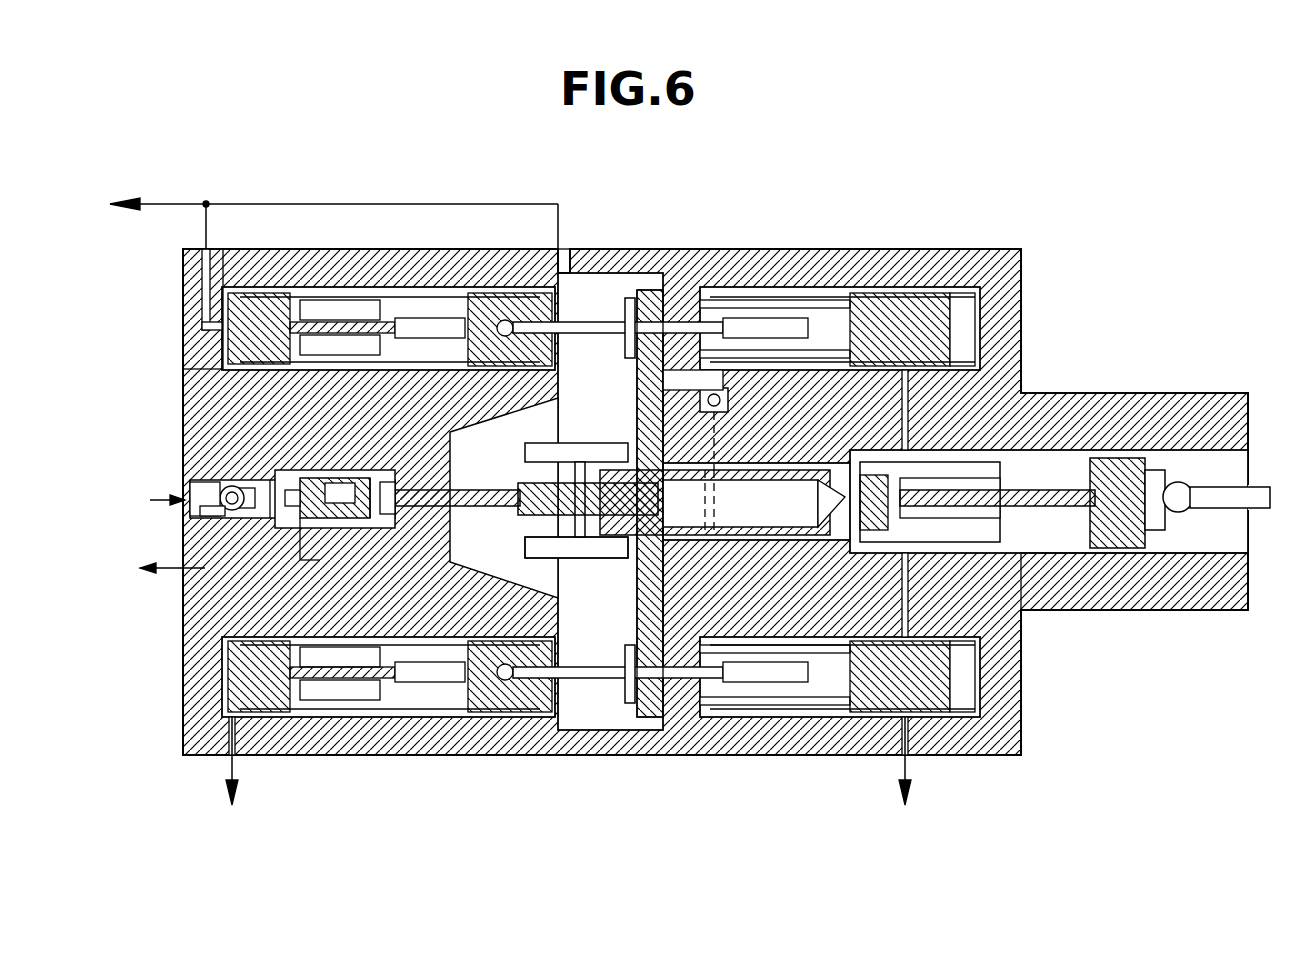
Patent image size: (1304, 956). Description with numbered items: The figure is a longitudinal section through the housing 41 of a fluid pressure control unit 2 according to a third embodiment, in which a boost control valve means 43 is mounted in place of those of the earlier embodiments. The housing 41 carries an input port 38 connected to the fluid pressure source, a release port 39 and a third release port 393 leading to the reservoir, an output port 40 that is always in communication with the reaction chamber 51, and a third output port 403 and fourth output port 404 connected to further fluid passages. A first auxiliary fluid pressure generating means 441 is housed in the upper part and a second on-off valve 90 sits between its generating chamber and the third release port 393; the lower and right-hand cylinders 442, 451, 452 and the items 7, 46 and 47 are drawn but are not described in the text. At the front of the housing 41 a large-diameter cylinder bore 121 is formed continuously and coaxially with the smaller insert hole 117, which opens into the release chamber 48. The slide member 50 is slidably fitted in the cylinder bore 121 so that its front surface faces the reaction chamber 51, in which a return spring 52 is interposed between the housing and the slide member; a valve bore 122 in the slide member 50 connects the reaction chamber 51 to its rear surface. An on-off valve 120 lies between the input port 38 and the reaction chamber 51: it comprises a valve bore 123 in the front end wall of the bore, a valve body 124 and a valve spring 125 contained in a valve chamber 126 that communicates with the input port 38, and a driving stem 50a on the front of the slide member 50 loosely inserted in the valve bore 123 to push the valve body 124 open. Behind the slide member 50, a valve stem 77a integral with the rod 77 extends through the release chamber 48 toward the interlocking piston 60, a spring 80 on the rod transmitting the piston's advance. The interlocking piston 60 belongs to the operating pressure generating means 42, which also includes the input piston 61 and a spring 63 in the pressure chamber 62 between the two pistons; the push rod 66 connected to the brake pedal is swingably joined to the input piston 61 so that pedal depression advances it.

The third release port 393 is at (208, 260).
The first auxiliary fluid pressure generating means 441 is at (382, 285).
The release port 39 is at (568, 258).
The fluid pressure control unit 2 is at (665, 245).
The first actuating chamber 451 is at (828, 285).
The second on-off valve 90 is at (200, 348).
The on-off valve 120 is at (225, 488).
The valve spring 125 is at (222, 492).
The input port 38 is at (195, 484).
The valve body 124 is at (142, 512).
The valve chamber 126 is at (200, 525).
The output port 40 is at (190, 575).
The reaction chamber 51 is at (292, 490).
The return spring 52 is at (340, 483).
The cylinder bore 121 is at (371, 478).
The insert hole 117 is at (390, 482).
The valve stem 77a is at (525, 483).
The spring 80 is at (625, 443).
The locking pin 47 is at (730, 400).
The passage 7 is at (865, 440).
The spring 63 is at (1090, 460).
The input piston 61 is at (1152, 470).
The push rod 66 is at (1230, 470).
The boost control valve means 43 is at (430, 508).
The valve bore 122 is at (325, 525).
The slide member 50 is at (360, 528).
The driving stem 50a is at (275, 520).
The valve bore 123 is at (250, 510).
The rod 77 is at (583, 558).
The partition plate 46 is at (630, 590).
The interlocking piston 60 is at (822, 540).
The pressure chamber 62 is at (960, 542).
The operating pressure generating means 42 is at (1060, 580).
The third output port 403 is at (245, 740).
The second pressure chamber 442 is at (392, 722).
The release chamber 48 is at (604, 717).
The housing 41 is at (604, 755).
The second actuating chamber 452 is at (816, 722).
The fourth output port 404 is at (915, 735).